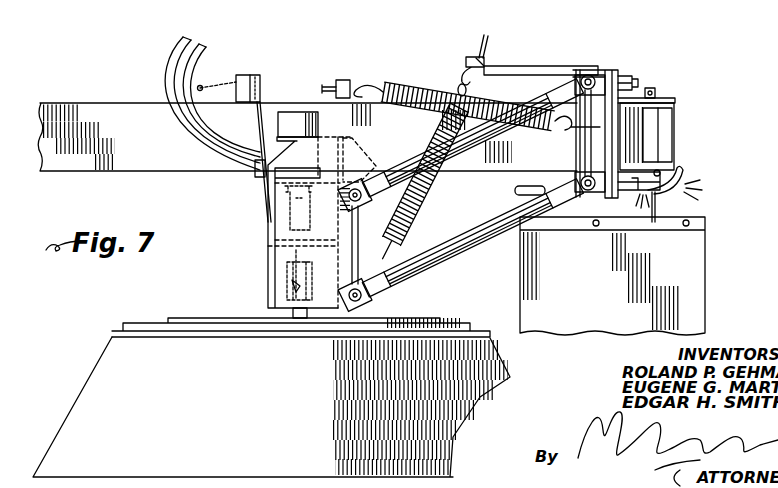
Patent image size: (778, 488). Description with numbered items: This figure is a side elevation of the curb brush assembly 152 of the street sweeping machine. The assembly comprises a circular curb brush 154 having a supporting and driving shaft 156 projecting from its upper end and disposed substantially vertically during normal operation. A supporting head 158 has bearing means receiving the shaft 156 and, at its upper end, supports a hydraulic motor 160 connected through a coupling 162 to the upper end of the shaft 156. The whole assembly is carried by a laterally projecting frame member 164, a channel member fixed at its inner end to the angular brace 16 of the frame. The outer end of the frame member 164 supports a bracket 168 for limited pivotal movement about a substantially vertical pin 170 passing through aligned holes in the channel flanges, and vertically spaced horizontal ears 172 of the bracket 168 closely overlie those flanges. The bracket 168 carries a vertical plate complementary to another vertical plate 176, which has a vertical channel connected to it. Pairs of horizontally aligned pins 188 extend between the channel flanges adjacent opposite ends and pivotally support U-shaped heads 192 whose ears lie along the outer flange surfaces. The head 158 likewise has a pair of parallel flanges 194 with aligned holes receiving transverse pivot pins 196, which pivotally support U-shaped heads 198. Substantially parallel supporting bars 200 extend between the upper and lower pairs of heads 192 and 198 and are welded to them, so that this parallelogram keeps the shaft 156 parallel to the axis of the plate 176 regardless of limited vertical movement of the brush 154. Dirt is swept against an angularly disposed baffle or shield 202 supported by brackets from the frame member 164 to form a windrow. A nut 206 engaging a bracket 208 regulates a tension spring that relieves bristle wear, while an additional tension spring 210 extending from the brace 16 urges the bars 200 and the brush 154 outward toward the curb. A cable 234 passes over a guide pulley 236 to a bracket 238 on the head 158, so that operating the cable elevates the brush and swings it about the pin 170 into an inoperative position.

The angular brace 16 is at (137, 162).
The curb brush assembly 152 is at (236, 310).
The circular curb brush 154 is at (95, 391).
The supporting and driving shaft 156 is at (278, 263).
The supporting head 158 is at (270, 222).
The hydraulic motor 160 is at (292, 116).
The coupling 162 is at (285, 206).
The laterally projecting frame member 164 is at (677, 141).
The bracket 168 is at (636, 75).
The pin 170 is at (657, 92).
The horizontal ears 172 is at (662, 101).
The vertical plate 176 is at (612, 73).
The pins 188 is at (590, 73).
The U-shaped heads 192 is at (575, 78).
The parallel flanges 194 is at (357, 176).
The pivot pins 196 is at (373, 200).
The U-shaped members or heads 198 is at (375, 206).
The supporting bars 200 is at (472, 148).
The baffle or shield 202 is at (700, 292).
The nut 206 is at (473, 57).
The bracket 208 is at (504, 62).
The tension spring 210 is at (396, 94).
The cable 234 is at (257, 130).
The guide pulley 236 is at (258, 67).
The bracket 238 is at (300, 287).